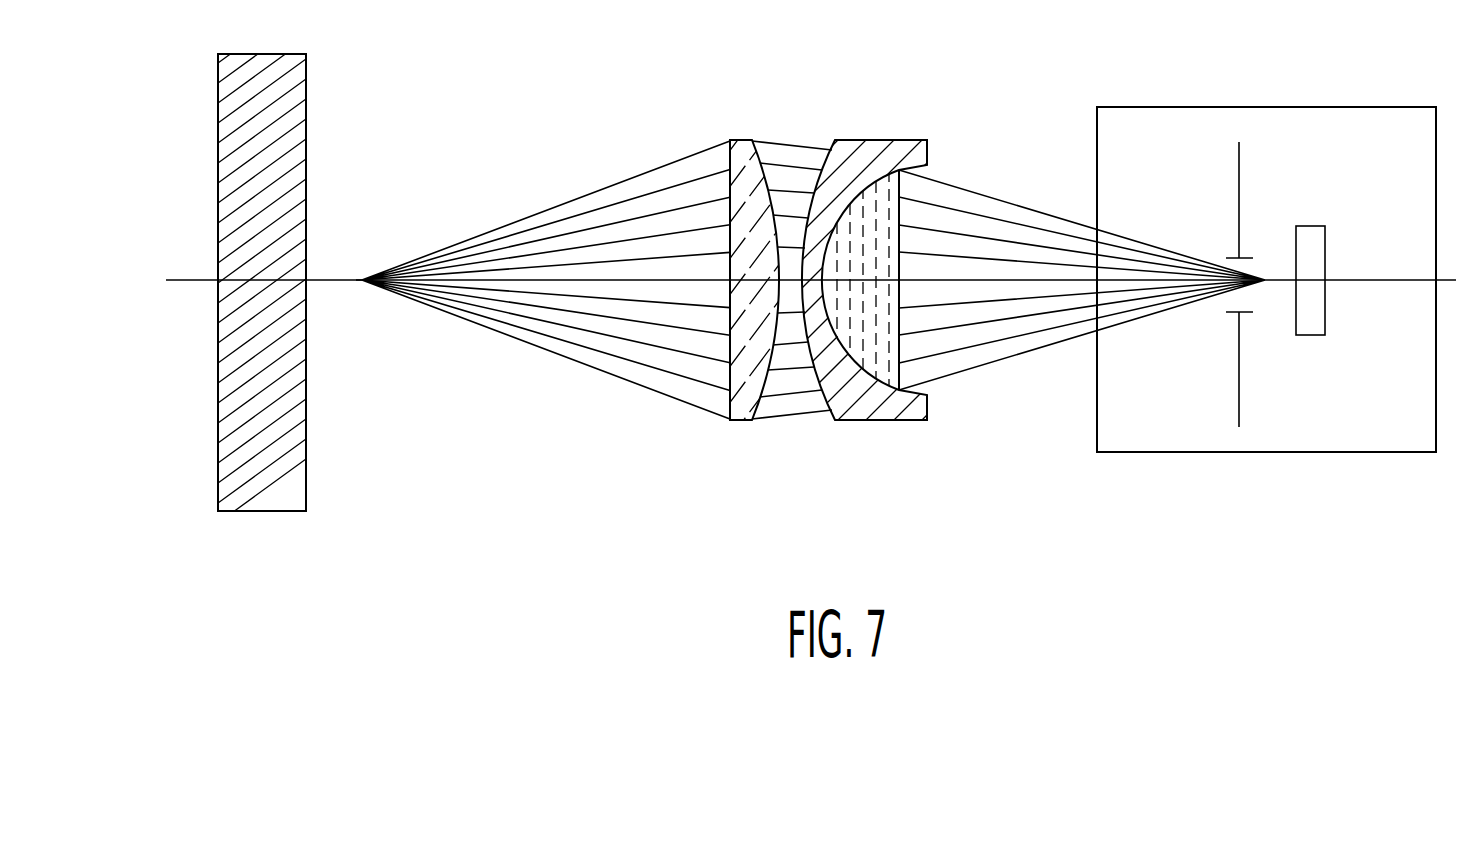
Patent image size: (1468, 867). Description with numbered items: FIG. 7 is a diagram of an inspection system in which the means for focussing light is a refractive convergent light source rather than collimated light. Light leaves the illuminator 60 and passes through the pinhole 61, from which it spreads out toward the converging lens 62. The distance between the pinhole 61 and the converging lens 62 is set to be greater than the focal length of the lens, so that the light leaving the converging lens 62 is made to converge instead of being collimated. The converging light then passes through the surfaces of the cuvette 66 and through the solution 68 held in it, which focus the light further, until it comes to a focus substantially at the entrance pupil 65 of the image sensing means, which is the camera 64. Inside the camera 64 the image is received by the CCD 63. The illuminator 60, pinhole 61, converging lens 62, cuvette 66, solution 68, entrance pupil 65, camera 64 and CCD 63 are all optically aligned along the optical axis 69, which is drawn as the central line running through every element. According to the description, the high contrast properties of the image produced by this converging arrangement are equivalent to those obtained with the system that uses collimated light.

The illuminator 60 is at (306, 503).
The pinhole 61 is at (362, 280).
The converging lens 62 is at (732, 140).
The CCD 63 is at (1309, 223).
The camera 64 is at (1208, 452).
The entrance pupil 65 is at (1240, 255).
The cuvette 66 is at (872, 422).
The solution 68 is at (882, 197).
The optical axis 69 is at (607, 283).